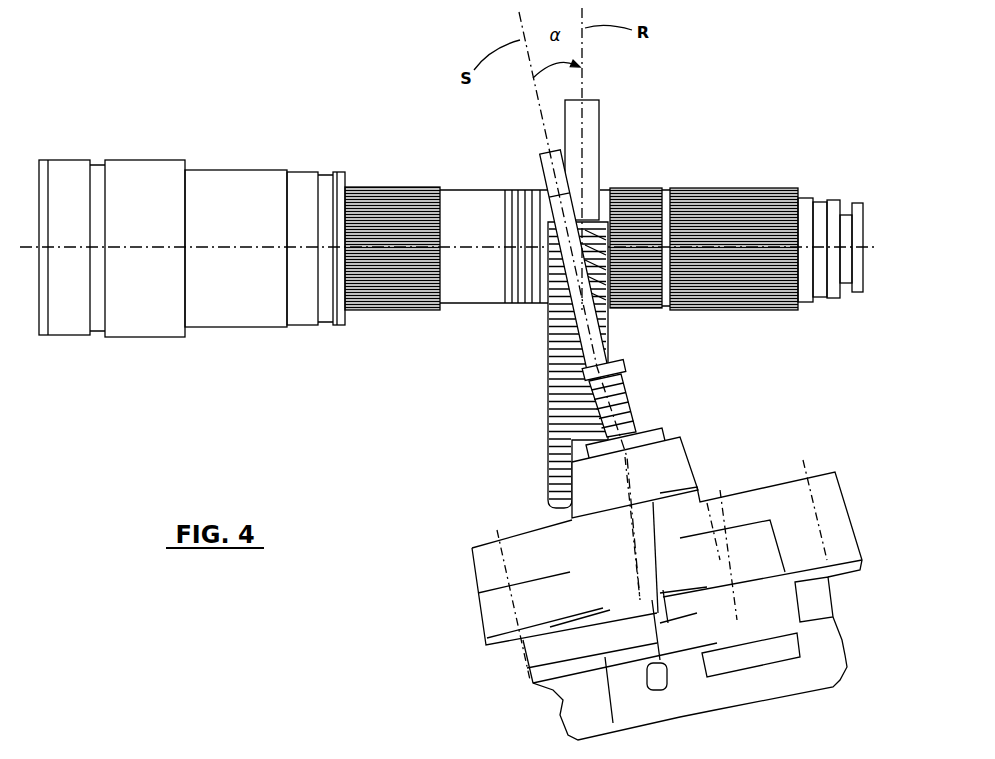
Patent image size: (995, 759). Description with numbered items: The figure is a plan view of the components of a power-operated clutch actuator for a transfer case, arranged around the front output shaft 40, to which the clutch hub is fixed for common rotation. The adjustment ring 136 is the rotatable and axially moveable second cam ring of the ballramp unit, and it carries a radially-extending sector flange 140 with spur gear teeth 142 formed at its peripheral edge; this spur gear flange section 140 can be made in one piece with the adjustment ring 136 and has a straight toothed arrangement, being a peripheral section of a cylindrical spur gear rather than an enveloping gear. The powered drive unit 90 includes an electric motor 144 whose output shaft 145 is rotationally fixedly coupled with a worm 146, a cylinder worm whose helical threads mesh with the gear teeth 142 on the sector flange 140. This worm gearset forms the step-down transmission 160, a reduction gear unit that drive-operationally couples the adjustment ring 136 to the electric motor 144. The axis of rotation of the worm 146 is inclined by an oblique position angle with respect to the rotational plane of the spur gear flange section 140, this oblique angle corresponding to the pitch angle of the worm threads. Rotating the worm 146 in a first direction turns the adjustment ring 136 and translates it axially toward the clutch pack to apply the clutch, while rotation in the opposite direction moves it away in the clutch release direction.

The front output shaft 40 is at (158, 176).
The powered drive unit 90 is at (616, 445).
The adjustment ring 136 is at (528, 365).
The sector flange 140 is at (590, 133).
The gear teeth 142 is at (548, 393).
The electric motor 144 is at (464, 613).
The output shaft 145 is at (612, 385).
The worm 146 is at (548, 330).
The step-down transmission 160 is at (620, 327).